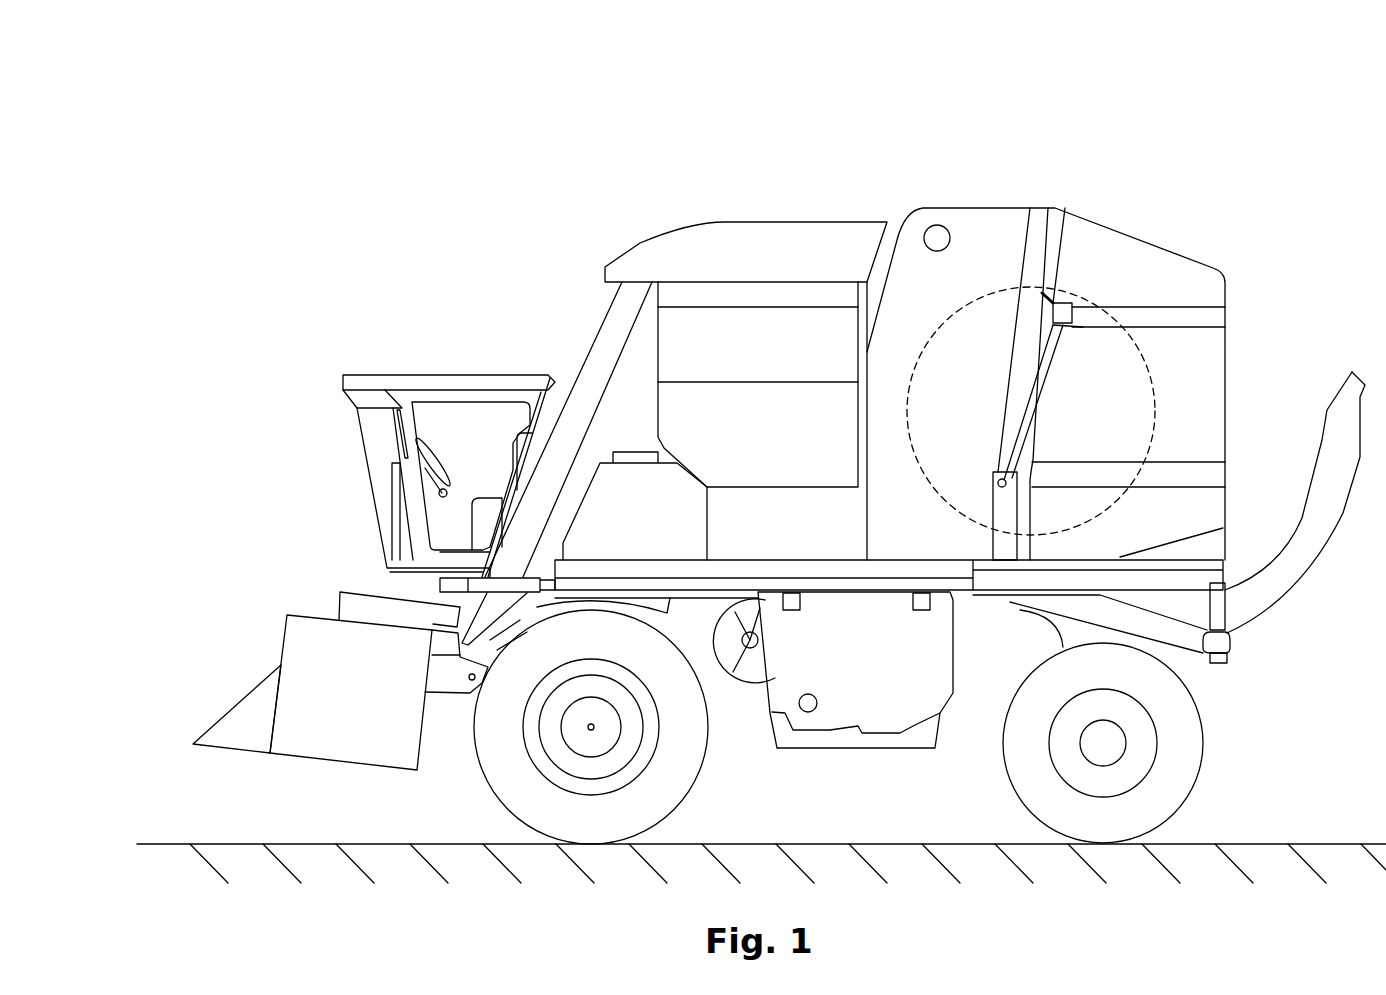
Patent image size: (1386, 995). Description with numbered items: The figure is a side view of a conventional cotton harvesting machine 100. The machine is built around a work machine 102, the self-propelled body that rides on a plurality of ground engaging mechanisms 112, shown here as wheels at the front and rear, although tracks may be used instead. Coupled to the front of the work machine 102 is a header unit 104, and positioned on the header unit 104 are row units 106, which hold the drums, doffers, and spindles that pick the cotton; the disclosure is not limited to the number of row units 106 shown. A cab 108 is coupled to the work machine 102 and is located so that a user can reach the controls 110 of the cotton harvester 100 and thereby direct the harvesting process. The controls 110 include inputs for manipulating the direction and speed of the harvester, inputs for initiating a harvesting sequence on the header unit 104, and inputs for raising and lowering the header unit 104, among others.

The cotton harvesting machine 100 is at (543, 167).
The work machine 102 is at (950, 192).
The header unit 104 is at (278, 600).
The row units 106 is at (235, 757).
The cab 108 is at (395, 373).
The controls 110 is at (442, 453).
The ground engaging mechanisms 112 is at (708, 763).